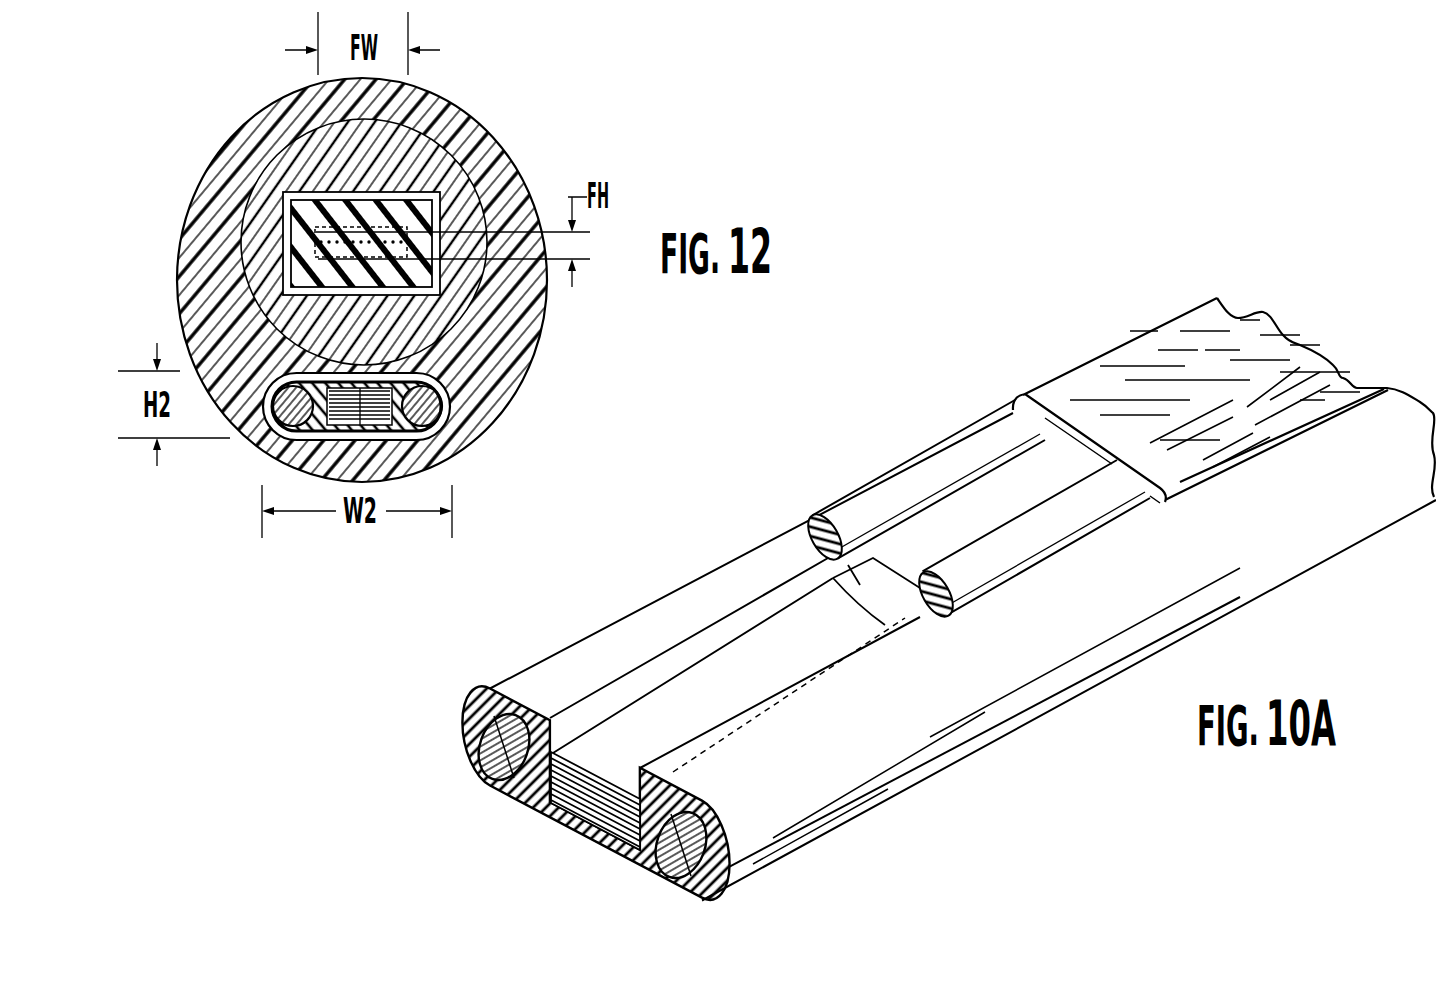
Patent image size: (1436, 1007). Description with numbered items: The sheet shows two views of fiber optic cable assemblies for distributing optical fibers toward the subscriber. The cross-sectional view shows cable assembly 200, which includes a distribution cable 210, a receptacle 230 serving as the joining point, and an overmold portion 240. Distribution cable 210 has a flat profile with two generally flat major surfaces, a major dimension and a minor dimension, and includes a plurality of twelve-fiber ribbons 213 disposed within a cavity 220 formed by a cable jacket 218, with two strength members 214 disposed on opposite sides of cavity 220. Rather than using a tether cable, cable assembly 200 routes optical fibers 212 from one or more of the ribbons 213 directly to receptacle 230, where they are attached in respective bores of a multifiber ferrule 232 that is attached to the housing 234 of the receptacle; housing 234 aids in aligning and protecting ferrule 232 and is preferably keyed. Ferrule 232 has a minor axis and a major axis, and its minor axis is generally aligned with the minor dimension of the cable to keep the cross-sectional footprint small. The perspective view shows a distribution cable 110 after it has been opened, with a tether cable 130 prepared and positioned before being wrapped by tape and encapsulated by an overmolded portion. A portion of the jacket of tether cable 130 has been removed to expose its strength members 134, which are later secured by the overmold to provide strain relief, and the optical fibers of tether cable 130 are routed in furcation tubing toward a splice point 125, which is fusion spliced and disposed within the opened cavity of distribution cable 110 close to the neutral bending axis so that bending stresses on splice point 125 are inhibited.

In FIG. 12, the cable assembly 200 is at (186, 140).
In FIG. 12, the receptacle 230 is at (492, 137).
In FIG. 12, the housing 234 is at (303, 140).
In FIG. 12, the multifiber ferrule 232 is at (286, 212).
In FIG. 12, the optical fibers 212 is at (393, 236).
In FIG. 12, the ribbons 213 is at (405, 375).
In FIG. 12, the strength members 214 is at (448, 388).
In FIG. 12, the distribution cable 210 is at (463, 397).
In FIG. 12, the cable jacket 218 is at (450, 424).
In FIG. 12, the cavity 220 is at (433, 441).
In FIG. 12, the overmold portion 240 is at (278, 455).
In FIG. 10A, the distribution cable 110 is at (528, 681).
In FIG. 10A, the splice point 125 is at (858, 592).
In FIG. 10A, the tether cable 130 is at (1103, 371).
In FIG. 10A, the strength members 134 is at (812, 514).